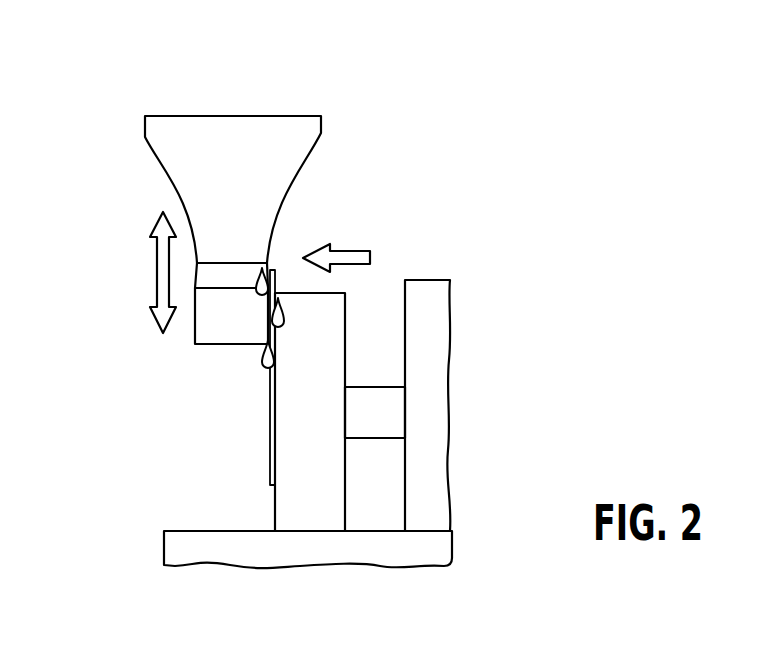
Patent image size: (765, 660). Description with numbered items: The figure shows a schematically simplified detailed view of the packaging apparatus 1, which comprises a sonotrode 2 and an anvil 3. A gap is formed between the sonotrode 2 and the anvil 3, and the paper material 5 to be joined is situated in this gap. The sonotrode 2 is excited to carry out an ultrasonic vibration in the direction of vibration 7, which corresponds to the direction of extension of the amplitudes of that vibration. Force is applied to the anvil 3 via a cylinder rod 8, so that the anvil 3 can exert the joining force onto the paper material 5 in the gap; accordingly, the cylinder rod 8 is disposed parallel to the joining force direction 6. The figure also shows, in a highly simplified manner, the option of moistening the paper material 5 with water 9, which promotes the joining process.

The packaging apparatus 1 is at (90, 115).
The sonotrode 2 is at (233, 127).
The anvil 3 is at (310, 515).
The paper material 5 is at (268, 466).
The joining force direction 6 is at (347, 257).
The direction of vibration 7 is at (163, 273).
The cylinder rod 8 is at (380, 412).
The water 9 is at (263, 362).